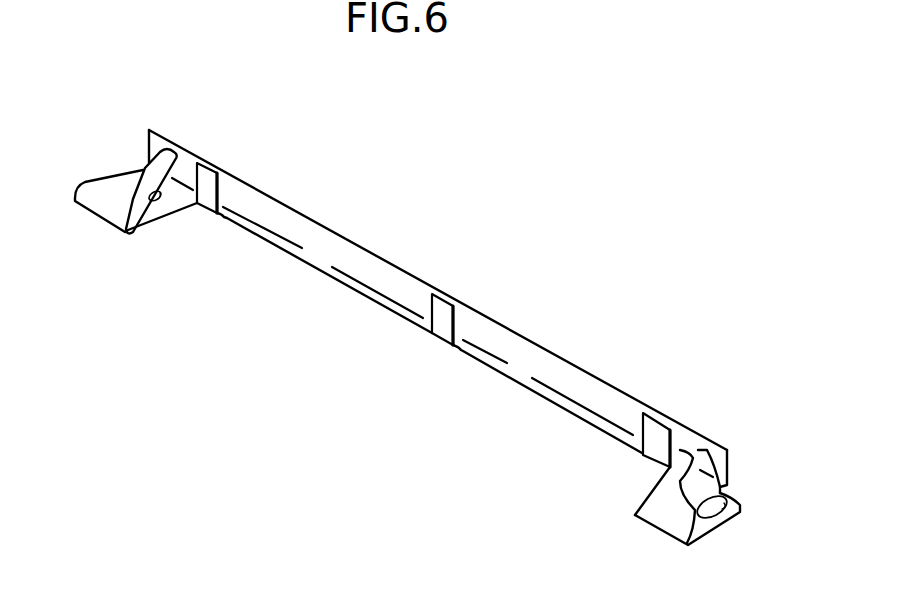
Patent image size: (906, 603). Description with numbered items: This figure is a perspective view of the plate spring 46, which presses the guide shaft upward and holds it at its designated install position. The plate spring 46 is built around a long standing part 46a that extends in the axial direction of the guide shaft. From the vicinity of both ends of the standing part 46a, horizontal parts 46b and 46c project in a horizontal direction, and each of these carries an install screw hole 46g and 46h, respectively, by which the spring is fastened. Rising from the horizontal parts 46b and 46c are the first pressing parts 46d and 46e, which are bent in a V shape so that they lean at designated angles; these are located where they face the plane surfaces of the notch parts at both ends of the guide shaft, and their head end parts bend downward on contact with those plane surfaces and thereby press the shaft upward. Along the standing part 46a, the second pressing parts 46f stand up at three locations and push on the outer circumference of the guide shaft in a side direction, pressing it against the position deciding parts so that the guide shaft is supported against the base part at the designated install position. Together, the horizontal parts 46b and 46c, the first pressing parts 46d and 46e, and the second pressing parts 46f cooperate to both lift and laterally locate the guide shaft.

The plate spring 46 is at (431, 274).
The standing part 46a is at (537, 350).
The horizontal part 46b is at (140, 225).
The horizontal part 46c is at (708, 525).
The first pressing part 46d is at (153, 165).
The first pressing part 46e is at (687, 452).
The second pressing part 46f is at (653, 455).
The install screw hole 46g is at (152, 203).
The install screw hole 46h is at (740, 498).